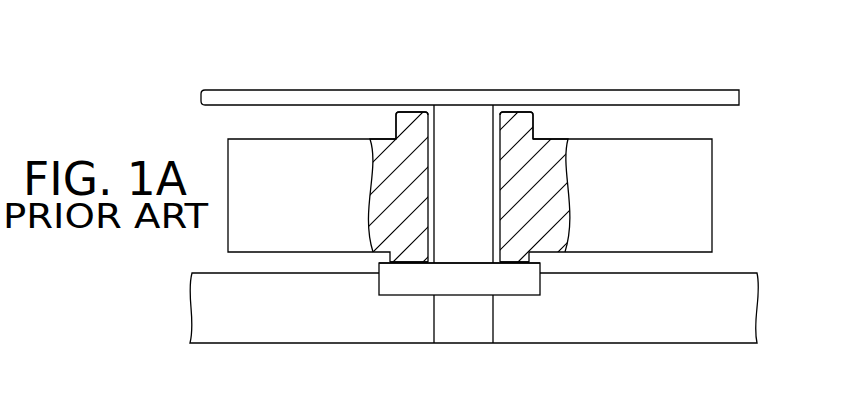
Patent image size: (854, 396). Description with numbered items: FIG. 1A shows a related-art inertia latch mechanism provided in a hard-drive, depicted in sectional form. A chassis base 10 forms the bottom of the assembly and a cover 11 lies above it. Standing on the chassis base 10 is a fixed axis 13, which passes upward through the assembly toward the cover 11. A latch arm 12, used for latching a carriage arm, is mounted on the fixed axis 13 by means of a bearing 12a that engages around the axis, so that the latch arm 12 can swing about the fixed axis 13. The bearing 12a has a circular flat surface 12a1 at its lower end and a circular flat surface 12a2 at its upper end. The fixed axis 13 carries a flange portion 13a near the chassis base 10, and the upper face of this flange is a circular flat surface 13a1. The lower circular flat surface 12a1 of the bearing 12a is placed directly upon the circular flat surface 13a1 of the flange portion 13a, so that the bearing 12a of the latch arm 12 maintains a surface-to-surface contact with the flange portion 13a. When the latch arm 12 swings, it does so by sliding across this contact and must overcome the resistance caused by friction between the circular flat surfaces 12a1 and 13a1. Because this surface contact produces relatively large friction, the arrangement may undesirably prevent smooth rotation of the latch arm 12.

The chassis base 10 is at (740, 294).
The cover 11 is at (722, 96).
The latch arm 12 is at (707, 186).
The bearing 12a is at (528, 126).
The circular flat surface 12a1 is at (508, 272).
The circular flat surface 12a2 is at (515, 113).
The fixed axis 13 is at (467, 112).
The flange portion 13a is at (525, 284).
The circular flat surface 13a1 is at (522, 252).